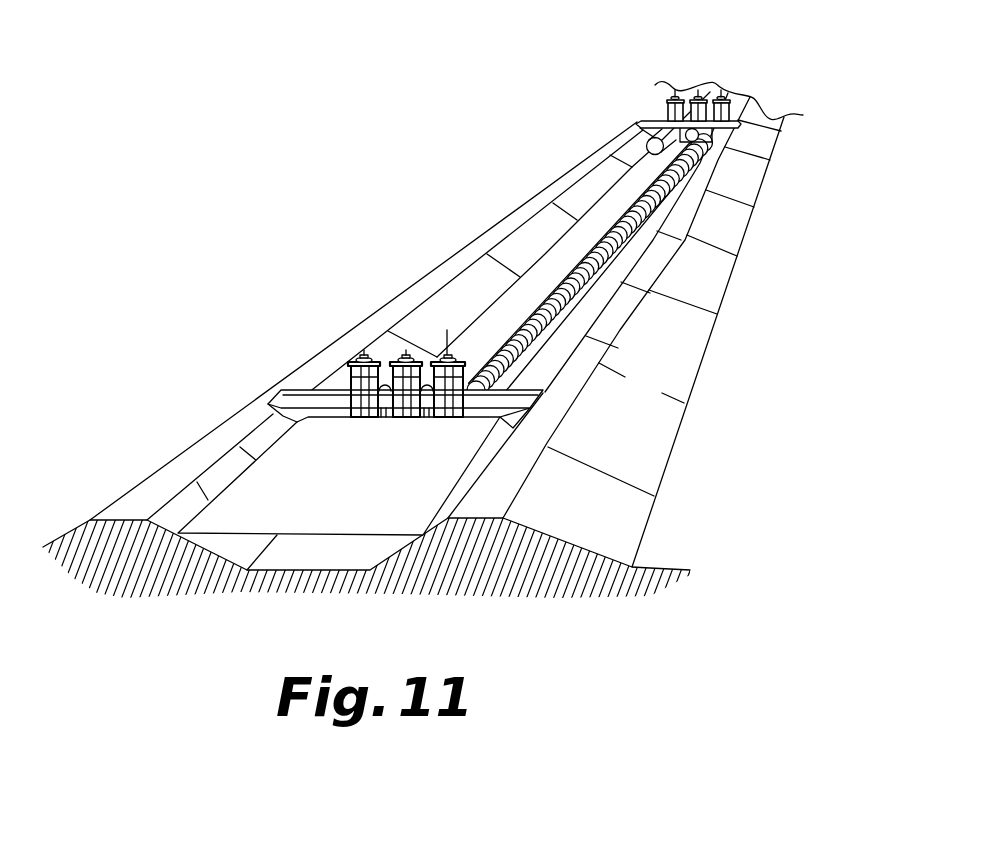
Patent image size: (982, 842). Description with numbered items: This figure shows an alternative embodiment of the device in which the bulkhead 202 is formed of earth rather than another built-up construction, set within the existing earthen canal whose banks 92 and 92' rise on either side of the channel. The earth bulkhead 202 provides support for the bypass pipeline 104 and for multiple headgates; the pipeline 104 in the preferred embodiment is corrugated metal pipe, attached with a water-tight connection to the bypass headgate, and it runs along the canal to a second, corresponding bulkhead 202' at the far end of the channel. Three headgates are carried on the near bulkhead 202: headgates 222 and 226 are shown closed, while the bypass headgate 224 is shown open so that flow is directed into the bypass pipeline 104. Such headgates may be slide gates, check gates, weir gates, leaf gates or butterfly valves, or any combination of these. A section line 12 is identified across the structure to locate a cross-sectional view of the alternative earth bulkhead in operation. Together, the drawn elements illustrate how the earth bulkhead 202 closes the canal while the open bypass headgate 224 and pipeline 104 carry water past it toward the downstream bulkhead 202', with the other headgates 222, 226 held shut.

The levee / embankment 92 is at (366, 321).
The far levee crest 92' is at (729, 70).
The bypass pipeline 104 is at (634, 260).
The bulkhead 202 is at (360, 443).
The second mobile platform 202' is at (652, 120).
The headgate 222 is at (357, 360).
The bypass headgate 224 is at (454, 358).
The headgate 226 is at (427, 380).
The section line 12- 12 is at (577, 448).